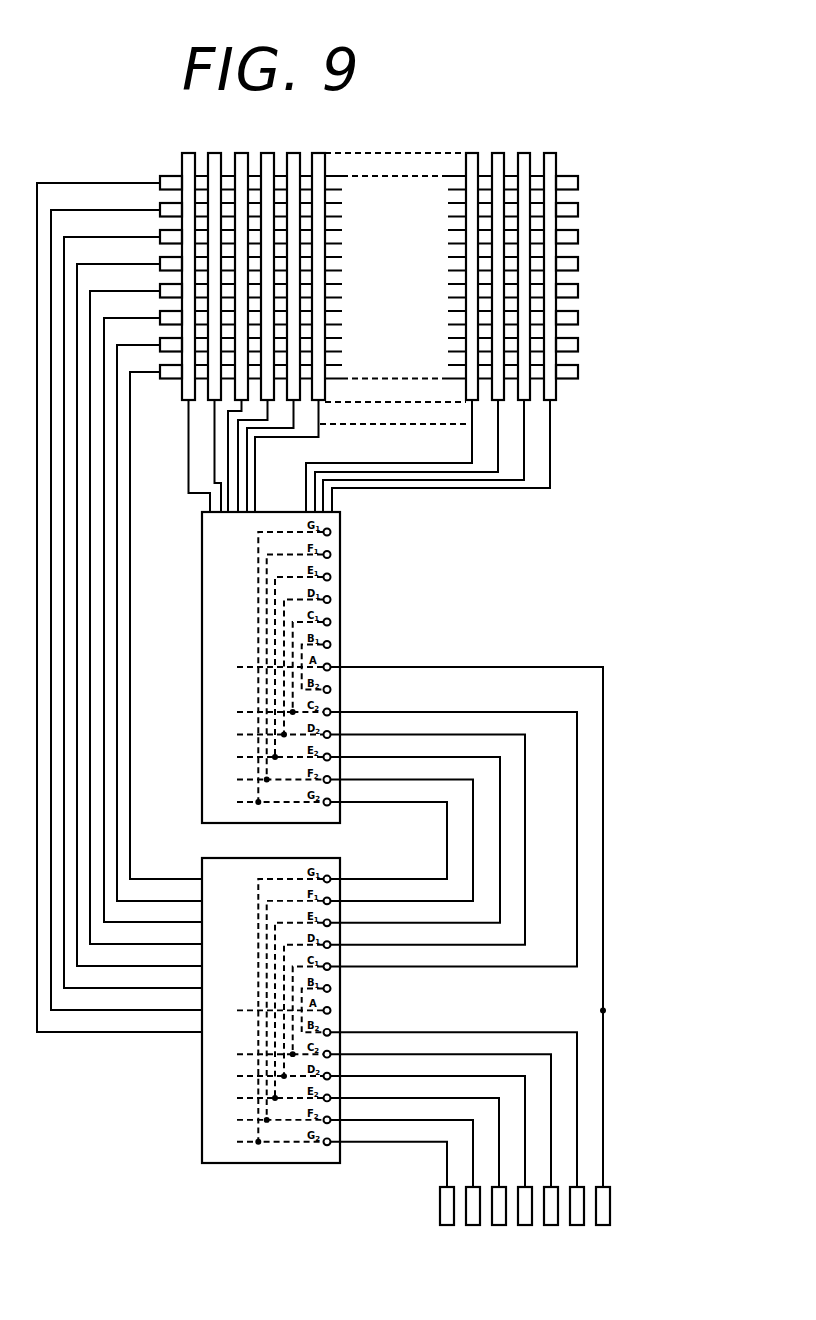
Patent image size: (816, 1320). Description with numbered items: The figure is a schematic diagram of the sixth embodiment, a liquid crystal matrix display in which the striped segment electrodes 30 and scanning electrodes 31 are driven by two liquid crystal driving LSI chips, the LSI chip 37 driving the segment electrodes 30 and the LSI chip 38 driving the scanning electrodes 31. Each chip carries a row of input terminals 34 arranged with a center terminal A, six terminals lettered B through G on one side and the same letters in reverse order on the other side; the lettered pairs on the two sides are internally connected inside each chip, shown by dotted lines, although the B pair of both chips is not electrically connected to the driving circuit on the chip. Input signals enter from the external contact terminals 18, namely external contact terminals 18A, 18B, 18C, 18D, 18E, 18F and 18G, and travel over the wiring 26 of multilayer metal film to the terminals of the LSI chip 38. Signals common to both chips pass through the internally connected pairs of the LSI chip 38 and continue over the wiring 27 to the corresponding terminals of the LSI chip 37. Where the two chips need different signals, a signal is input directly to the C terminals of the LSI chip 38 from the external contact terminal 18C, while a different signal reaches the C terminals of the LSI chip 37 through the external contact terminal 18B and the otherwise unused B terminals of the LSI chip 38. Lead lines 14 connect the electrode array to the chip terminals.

The segment electrodes 30 is at (189, 160).
The scanning electrodes 31 is at (170, 180).
The lead lines 14 is at (455, 481).
The LSI chip 37 is at (203, 722).
The LSI chip 38 is at (203, 1140).
The input terminals 34 is at (331, 805).
The wiring 27 is at (584, 886).
The wiring 26 is at (584, 1094).
The external contact terminals 18 is at (504, 1222).
The external contact terminal 18A is at (603, 1226).
The external contact terminal 18B is at (577, 1226).
The external contact terminal 18C is at (551, 1226).
The external contact terminal 18D is at (525, 1226).
The external contact terminal 18E is at (499, 1226).
The external contact terminal 18F is at (473, 1226).
The external contact terminal 18G is at (446, 1226).